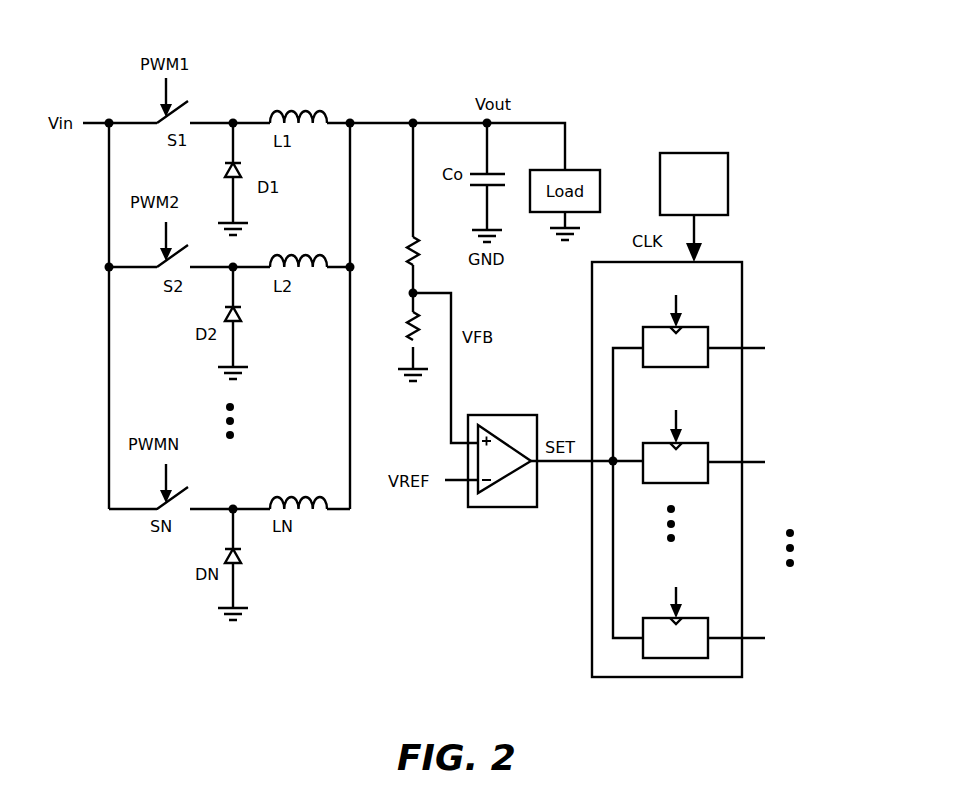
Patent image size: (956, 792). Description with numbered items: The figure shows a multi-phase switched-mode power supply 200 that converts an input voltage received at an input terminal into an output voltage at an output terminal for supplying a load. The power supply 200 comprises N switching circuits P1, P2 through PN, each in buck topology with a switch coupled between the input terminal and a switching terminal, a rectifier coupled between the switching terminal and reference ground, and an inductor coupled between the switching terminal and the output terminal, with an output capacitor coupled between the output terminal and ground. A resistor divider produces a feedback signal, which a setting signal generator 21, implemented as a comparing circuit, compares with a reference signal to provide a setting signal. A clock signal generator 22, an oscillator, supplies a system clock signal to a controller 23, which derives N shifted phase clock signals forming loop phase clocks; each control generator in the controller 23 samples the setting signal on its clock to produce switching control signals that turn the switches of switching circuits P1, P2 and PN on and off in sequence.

The multi-phase SMPS 200 is at (760, 67).
The setting signal generator 21 is at (522, 415).
The clock signal generator 22 is at (660, 153).
The controller 23 is at (742, 262).
The switching circuit P1 is at (314, 93).
The switching circuit P2 is at (308, 228).
The switching circuit PN is at (284, 476).